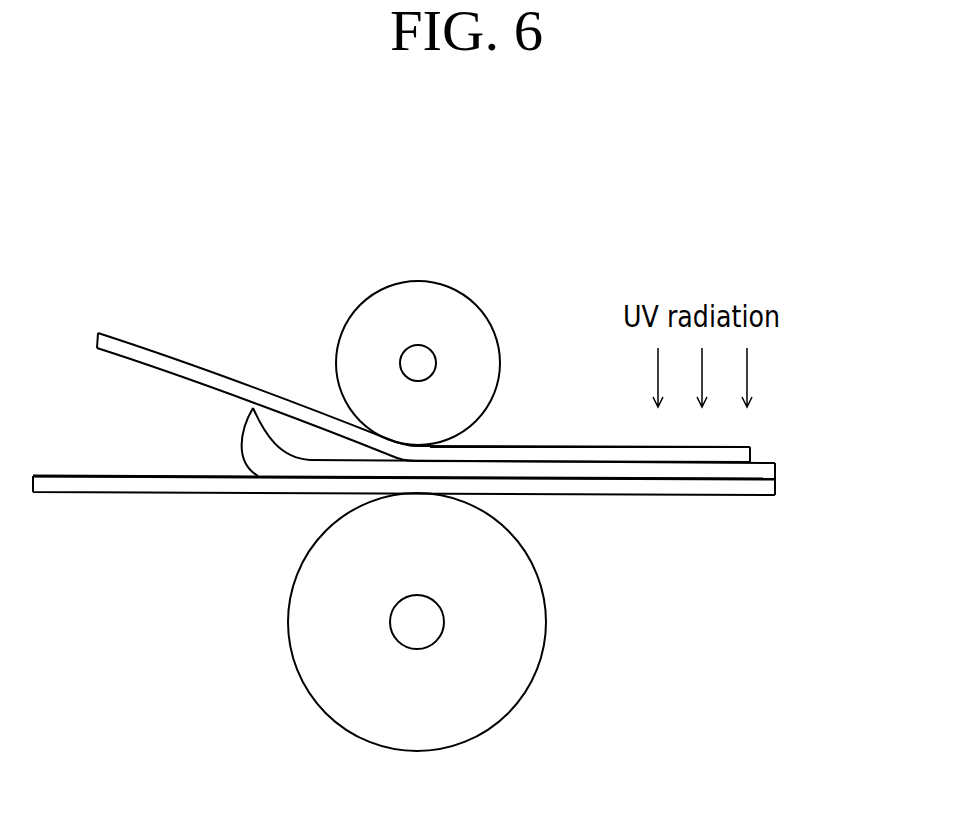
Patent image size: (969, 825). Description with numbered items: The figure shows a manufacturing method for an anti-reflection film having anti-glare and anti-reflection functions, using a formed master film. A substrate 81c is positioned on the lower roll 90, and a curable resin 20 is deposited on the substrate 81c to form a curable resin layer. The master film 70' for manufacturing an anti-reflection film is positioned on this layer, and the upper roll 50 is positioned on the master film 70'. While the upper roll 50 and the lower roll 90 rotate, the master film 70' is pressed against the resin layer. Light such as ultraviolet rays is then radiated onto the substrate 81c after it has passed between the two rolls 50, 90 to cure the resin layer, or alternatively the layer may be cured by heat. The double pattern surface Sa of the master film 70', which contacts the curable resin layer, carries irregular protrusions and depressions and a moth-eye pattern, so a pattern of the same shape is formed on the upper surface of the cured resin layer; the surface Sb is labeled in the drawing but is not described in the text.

The curable resin 20 is at (252, 446).
The upper roll 50 is at (430, 300).
The master film for manufacturing an anti-reflection film 70' is at (466, 397).
The substrate 81c is at (765, 487).
The lower roll 90 is at (528, 622).
The double pattern surface Sa is at (645, 480).
The film upper surface Sb is at (594, 436).